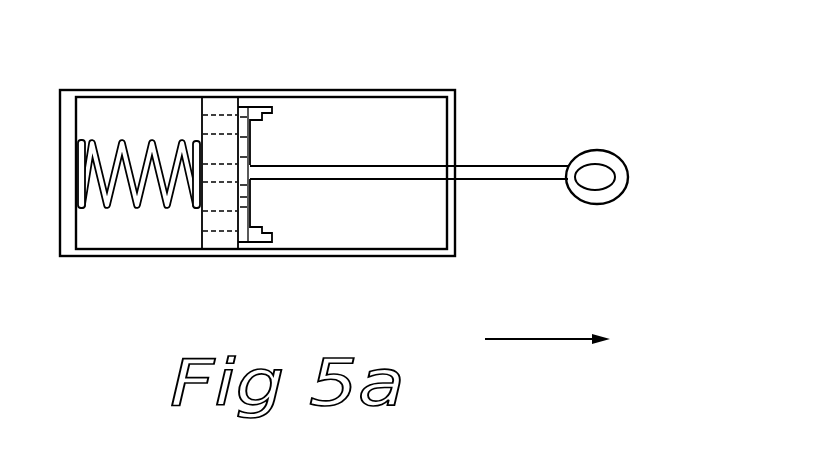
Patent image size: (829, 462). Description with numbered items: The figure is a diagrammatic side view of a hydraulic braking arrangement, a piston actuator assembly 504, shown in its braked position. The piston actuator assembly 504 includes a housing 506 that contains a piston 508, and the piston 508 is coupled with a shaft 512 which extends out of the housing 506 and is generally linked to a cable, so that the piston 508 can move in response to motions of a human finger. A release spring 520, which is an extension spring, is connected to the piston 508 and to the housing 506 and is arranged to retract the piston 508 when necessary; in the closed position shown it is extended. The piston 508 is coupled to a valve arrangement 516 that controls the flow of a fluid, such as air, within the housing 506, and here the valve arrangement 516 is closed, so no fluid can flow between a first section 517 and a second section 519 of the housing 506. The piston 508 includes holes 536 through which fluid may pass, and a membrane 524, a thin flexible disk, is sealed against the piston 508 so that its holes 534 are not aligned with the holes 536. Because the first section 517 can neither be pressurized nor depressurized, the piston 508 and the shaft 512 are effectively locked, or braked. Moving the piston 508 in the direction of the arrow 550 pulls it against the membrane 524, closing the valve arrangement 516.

The piston actuator assembly 504 is at (532, 76).
The housing 506 is at (418, 90).
The piston 508 is at (218, 106).
The shaft 512 is at (493, 173).
The valve arrangement 516 is at (286, 134).
The first section 517 is at (121, 112).
The second section 519 is at (432, 210).
The release spring 520 is at (108, 208).
The membrane 524 is at (250, 185).
The holes 534 is at (242, 200).
The holes 536 is at (218, 223).
The arrow 550 is at (538, 338).